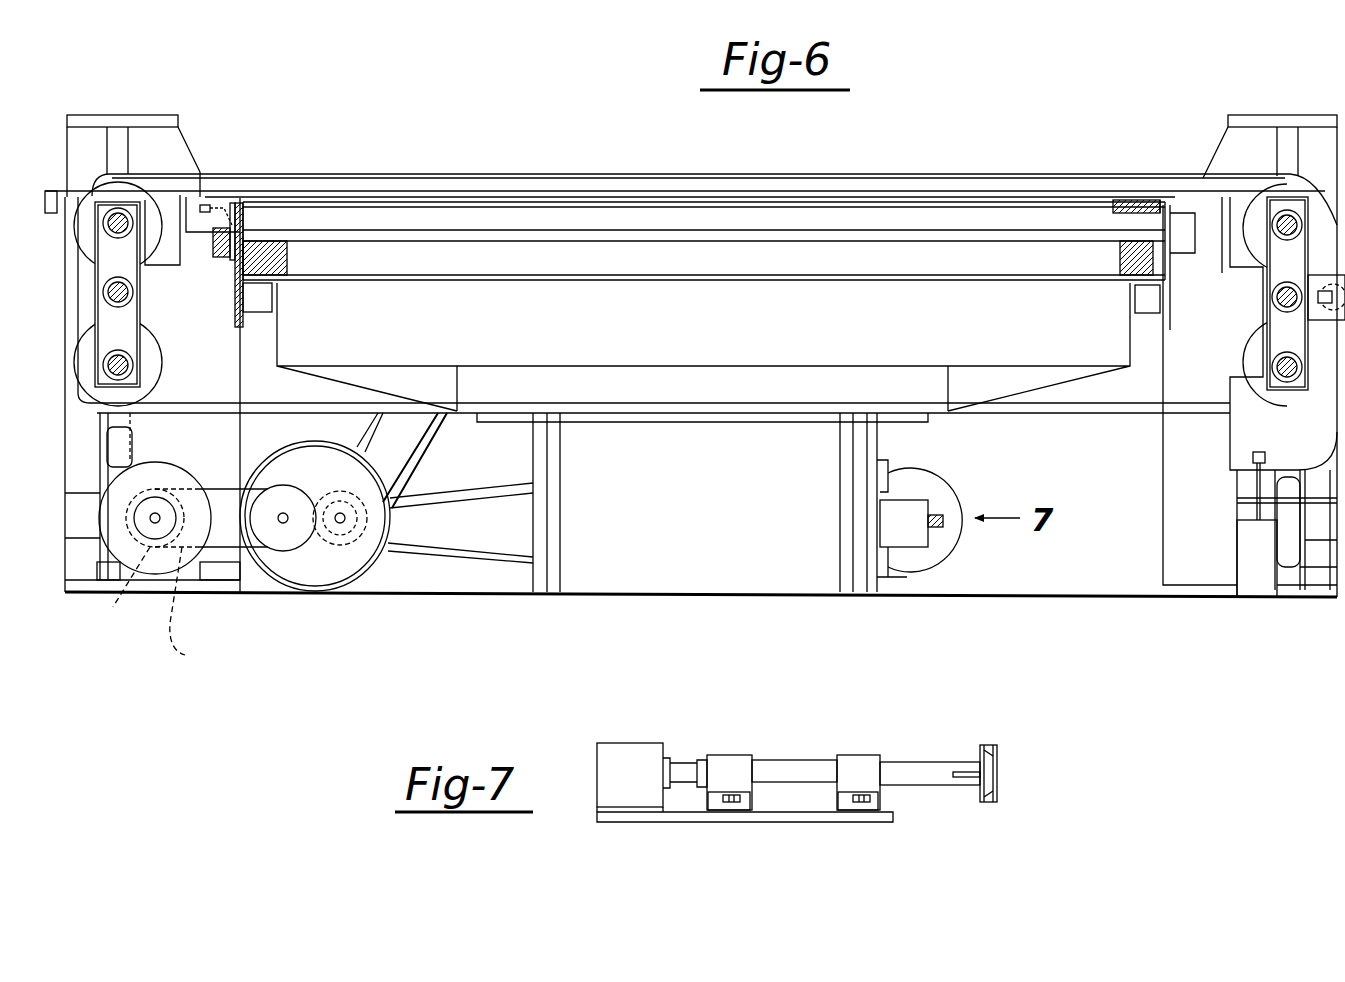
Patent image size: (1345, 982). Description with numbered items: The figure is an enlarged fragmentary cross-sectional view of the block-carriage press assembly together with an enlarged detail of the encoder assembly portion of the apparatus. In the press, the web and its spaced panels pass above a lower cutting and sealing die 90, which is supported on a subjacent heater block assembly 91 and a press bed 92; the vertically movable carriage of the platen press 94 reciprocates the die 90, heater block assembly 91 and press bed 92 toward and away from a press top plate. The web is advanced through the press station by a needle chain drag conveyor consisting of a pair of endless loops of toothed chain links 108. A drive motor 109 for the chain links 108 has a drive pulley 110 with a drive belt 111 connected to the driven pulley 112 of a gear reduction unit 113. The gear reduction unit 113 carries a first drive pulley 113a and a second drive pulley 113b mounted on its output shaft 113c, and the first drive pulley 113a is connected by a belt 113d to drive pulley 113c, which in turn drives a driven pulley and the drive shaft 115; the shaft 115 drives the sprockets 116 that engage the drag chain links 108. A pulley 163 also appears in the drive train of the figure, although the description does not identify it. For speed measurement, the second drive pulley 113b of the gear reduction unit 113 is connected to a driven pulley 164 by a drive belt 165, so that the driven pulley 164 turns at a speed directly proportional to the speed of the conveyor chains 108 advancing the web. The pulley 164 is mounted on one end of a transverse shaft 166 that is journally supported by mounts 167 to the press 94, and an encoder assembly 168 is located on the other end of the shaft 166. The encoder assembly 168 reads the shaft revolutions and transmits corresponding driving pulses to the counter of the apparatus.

In FIG. 6, the lower cutting and sealing die 90 is at (1127, 207).
In FIG. 6, the heater block assembly 91 is at (537, 228).
In FIG. 6, the press bed 92 is at (1134, 358).
In FIG. 6, the platen press 94 is at (884, 445).
In FIG. 6, the toothed chain links 108 is at (258, 412).
In FIG. 6, the drive motor 109 is at (170, 606).
In FIG. 6, the drive pulley 110 is at (127, 590).
In FIG. 6, the drive belt 111 is at (213, 487).
In FIG. 6, the driven pulley 112 is at (277, 537).
In FIG. 6, the gear reduction unit 113 is at (317, 584).
In FIG. 6, the first drive pulley 113a is at (310, 553).
In FIG. 6, the second drive pulley 113b is at (396, 432).
In FIG. 6, the output shaft 113c is at (347, 518).
In FIG. 6, the belt 113d is at (422, 453).
In FIG. 6, the drive shaft 115 is at (110, 227).
In FIG. 6, the sprockets 116 is at (150, 360).
In FIG. 6, the pulley 163 is at (336, 480).
In FIG. 7, the driven pulley 164 is at (993, 767).
In FIG. 6, the drive belt 165 is at (462, 495).
In FIG. 7, the drive belt 165 is at (990, 743).
In FIG. 7, the transverse shaft 166 is at (917, 770).
In FIG. 6, the mounts 167 is at (885, 566).
In FIG. 7, the mounts 167 is at (738, 760).
In FIG. 6, the encoder assembly 168 is at (938, 503).
In FIG. 7, the encoder assembly 168 is at (677, 702).